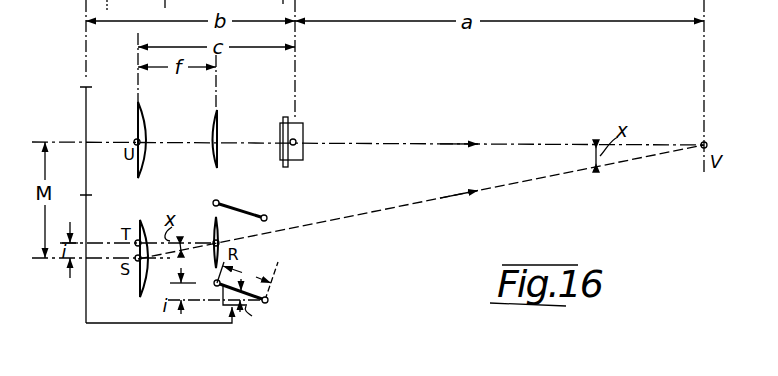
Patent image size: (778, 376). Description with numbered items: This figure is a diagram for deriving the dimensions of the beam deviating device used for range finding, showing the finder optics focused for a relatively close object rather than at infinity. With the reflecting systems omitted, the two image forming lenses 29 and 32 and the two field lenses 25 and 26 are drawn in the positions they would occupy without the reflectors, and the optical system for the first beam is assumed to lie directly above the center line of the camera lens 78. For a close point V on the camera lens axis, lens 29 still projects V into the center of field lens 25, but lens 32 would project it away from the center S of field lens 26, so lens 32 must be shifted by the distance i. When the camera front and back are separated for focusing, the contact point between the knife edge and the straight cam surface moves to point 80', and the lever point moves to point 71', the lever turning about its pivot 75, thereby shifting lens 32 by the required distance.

The field lens 25 is at (150, 120).
The field lens 26 is at (149, 222).
The image forming lens 29 is at (222, 120).
The image forming lens 32 is at (240, 234).
The point 71' is at (249, 270).
The pivot of lever 45 75 is at (259, 304).
The camera lens 78 is at (305, 122).
The point 80' is at (167, 328).